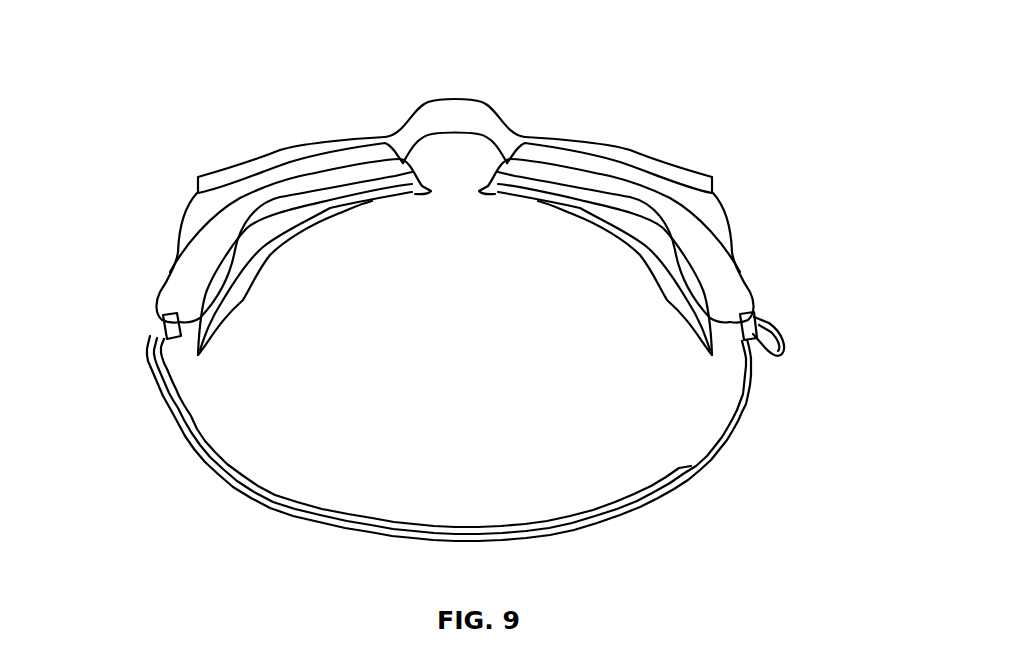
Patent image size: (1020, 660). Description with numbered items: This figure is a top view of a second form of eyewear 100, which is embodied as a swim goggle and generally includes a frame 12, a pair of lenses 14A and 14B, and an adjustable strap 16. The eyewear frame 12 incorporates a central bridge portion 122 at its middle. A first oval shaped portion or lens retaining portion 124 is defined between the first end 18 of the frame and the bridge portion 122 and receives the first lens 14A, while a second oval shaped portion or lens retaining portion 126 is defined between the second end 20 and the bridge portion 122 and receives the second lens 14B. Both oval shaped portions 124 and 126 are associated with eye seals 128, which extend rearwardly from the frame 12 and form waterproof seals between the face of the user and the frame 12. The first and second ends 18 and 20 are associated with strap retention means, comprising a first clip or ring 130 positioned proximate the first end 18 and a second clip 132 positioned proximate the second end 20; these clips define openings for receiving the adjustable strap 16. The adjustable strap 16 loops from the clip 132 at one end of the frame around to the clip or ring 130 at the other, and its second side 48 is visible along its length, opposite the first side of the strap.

The eyewear 100 is at (143, 70).
The frame 12 is at (438, 92).
The central bridge portion 122 is at (457, 111).
The first lens 14A is at (683, 162).
The second lens 14B is at (275, 150).
The second oval shaped portion or lens retaining portion 126 is at (233, 218).
The first oval shaped portion or lens retaining portion 124 is at (677, 218).
The eye seals 128 is at (287, 222).
The second end 20 is at (170, 295).
The first end 18 is at (748, 290).
The second clip 132 is at (163, 330).
The first clip or ring 130 is at (758, 355).
The adjustable strap 16 is at (745, 428).
The second side 48 is at (698, 470).